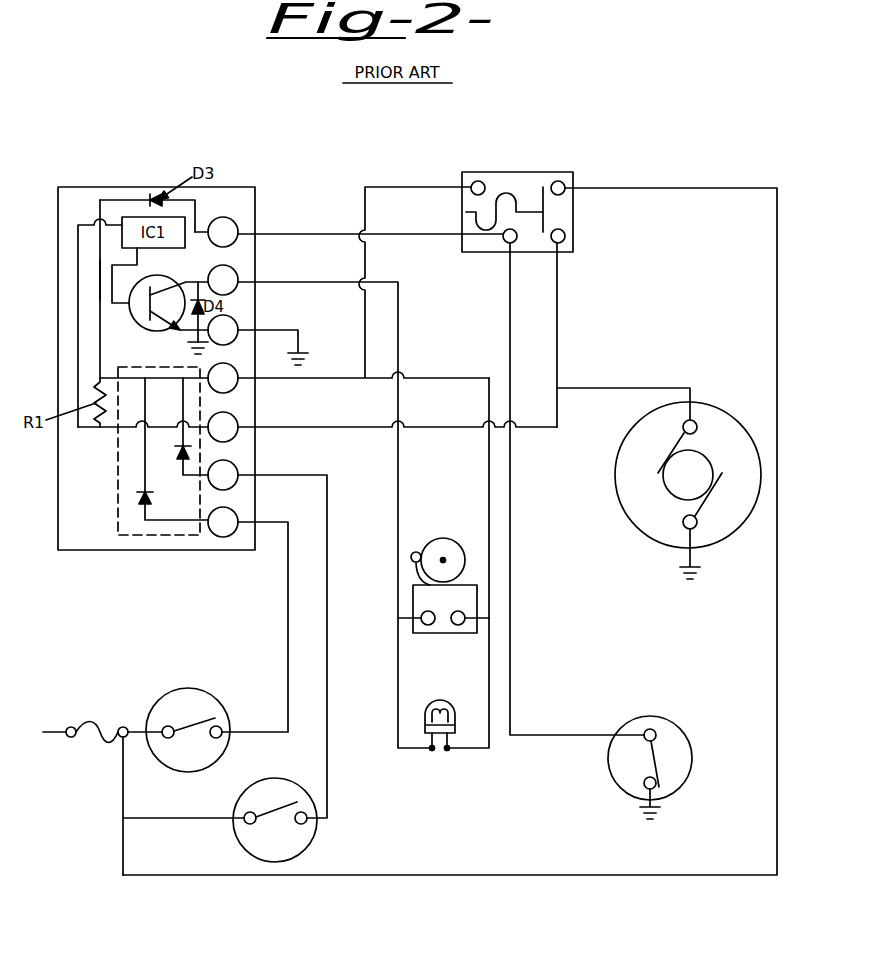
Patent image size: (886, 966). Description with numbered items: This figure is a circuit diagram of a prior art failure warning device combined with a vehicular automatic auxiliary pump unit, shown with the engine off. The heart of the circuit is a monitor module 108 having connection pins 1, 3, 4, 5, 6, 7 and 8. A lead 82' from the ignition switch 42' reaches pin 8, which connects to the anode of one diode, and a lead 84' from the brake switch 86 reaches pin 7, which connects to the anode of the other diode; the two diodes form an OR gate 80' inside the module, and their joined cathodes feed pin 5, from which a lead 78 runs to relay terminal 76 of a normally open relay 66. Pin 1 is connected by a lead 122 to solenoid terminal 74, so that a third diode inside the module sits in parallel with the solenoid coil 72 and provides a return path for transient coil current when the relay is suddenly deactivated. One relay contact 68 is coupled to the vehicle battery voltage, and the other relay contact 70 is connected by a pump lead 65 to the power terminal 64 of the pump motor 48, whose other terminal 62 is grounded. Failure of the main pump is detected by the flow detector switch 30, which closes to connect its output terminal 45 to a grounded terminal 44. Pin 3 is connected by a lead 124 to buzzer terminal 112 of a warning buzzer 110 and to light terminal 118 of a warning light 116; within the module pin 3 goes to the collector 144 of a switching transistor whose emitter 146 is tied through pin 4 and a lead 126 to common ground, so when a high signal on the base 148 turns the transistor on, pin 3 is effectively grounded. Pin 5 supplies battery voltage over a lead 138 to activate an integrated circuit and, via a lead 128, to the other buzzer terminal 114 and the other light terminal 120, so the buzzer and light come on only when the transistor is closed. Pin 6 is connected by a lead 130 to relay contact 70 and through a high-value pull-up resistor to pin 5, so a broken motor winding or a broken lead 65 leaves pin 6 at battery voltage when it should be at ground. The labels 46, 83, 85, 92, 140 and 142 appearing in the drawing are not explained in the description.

The monitor module 108 is at (73, 187).
The line 140 is at (78, 248).
The lead 138 is at (100, 273).
The line 142 is at (112, 293).
The base of switching transistor 148 is at (133, 300).
The collector of switching transistor 144 is at (197, 280).
The emitter of switching transistor 146 is at (183, 330).
The lead 122 is at (277, 233).
The lead 124 is at (280, 282).
The lead 126 is at (288, 330).
The lead 78 is at (412, 187).
The lead 128 is at (436, 379).
The lead 130 is at (287, 428).
The relay 66 is at (545, 172).
The relay terminal 76 is at (477, 181).
The relay contact 68 is at (565, 186).
The solenoid terminal 74 is at (513, 243).
The relay contact 70 is at (560, 243).
The solenoid coil 72 is at (477, 200).
The line 85 is at (777, 300).
The pump lead 65 is at (557, 320).
The pump 46 is at (632, 540).
The pump motor 48 is at (615, 480).
The power terminal 64 is at (698, 422).
The grounded terminal 62 is at (698, 528).
The warning buzzer 110 is at (428, 528).
The buzzer terminal 112 is at (421, 618).
The buzzer terminal 114 is at (465, 616).
The warning light 116 is at (447, 702).
The light terminal 118 is at (430, 750).
The light terminal 120 is at (449, 750).
The lead 82' is at (255, 627).
The lead 84' is at (309, 646).
The battery line 83 is at (140, 725).
The ignition switch 42' is at (212, 706).
The line 92 is at (208, 818).
The brake switch 86 is at (240, 847).
The flow detector switch 30 is at (632, 718).
The output terminal 45 is at (657, 730).
The grounded terminal 44 is at (642, 782).
The OR gate 80' is at (136, 451).
The pin 1 is at (229, 219).
The pin 3 is at (238, 259).
The pin 4 is at (226, 343).
The pin 5 is at (228, 392).
The pin 6 is at (228, 441).
The pin 7 is at (228, 489).
The pin 8 is at (228, 537).